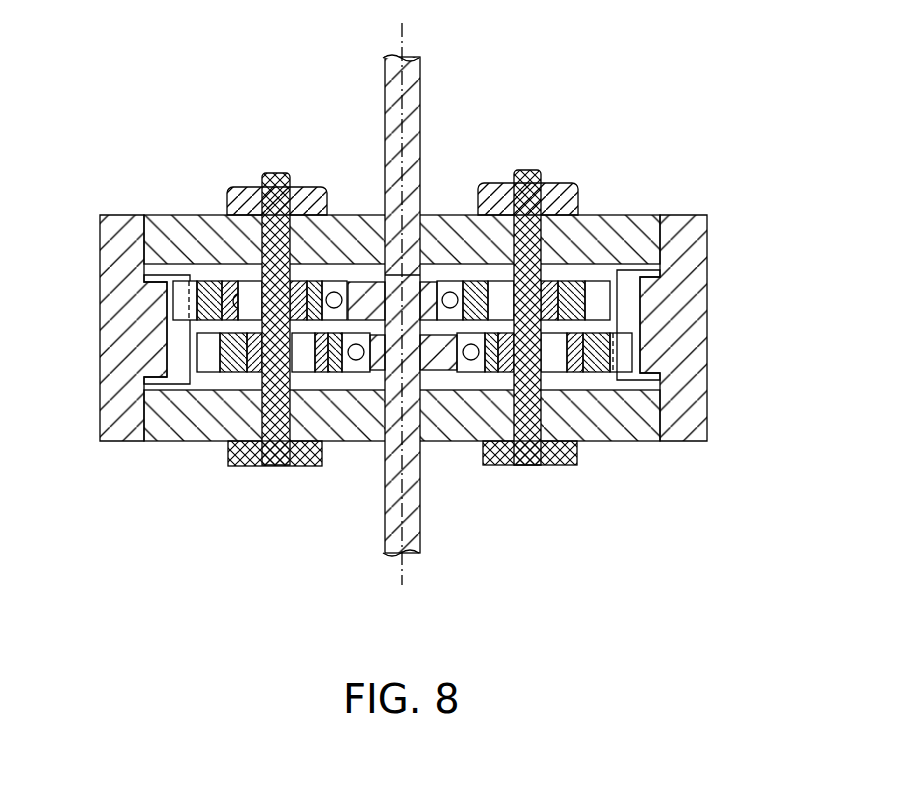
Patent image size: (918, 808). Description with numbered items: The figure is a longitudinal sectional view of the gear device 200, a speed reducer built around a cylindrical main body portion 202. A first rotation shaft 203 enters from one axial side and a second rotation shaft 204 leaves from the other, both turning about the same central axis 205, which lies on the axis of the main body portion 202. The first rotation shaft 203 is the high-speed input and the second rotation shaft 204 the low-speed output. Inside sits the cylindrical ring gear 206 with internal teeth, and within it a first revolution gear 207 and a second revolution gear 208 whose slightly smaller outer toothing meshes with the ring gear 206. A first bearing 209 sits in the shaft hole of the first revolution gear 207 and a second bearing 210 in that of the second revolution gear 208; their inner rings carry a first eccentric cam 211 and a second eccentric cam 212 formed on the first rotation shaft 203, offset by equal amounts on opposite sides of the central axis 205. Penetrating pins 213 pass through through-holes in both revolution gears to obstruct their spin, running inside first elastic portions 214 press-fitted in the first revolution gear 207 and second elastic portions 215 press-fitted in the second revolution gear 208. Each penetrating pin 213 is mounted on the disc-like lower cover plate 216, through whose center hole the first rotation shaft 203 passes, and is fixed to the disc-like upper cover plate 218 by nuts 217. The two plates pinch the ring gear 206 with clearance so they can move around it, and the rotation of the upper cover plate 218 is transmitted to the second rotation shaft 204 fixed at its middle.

The gear device 200 is at (570, 99).
The main body portion 202 is at (82, 173).
The first rotation shaft 203 is at (415, 521).
The second rotation shaft 204 is at (394, 93).
The central axis 205 is at (398, 32).
The ring gear 206 is at (707, 323).
The first revolution gear 207 is at (610, 350).
The second revolution gear 208 is at (587, 294).
The first bearing 209 is at (360, 372).
The second bearing 210 is at (440, 282).
The first eccentric cam 211 is at (447, 372).
The second eccentric cam 212 is at (360, 290).
The penetrating pin 213 is at (277, 173).
The first elastic portion 214 is at (257, 372).
The second elastic portion 215 is at (228, 280).
The lower cover plate 216 is at (184, 441).
The nut 217 is at (248, 197).
The upper cover plate 218 is at (342, 214).